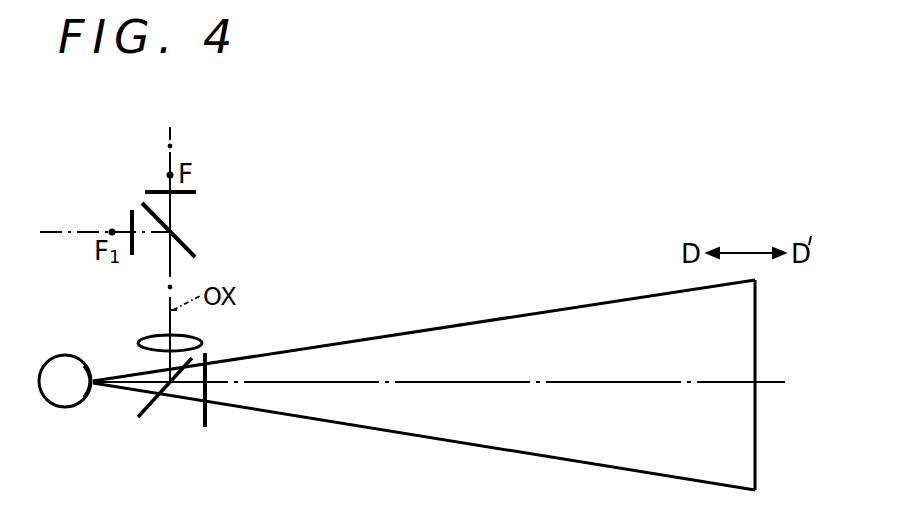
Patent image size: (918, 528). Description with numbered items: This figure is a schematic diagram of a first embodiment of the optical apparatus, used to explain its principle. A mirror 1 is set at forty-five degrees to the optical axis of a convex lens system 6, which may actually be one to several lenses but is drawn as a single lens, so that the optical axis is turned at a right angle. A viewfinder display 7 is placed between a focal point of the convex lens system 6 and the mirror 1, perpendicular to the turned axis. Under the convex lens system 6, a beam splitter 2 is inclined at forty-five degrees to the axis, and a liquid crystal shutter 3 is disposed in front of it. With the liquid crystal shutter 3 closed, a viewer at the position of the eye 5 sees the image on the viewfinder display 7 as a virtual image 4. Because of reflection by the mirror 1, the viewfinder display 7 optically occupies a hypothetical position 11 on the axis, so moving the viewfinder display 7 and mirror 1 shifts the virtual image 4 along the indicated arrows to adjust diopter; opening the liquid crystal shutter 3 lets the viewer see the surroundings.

The mirror 1 is at (194, 251).
The beam splitter 2 is at (140, 420).
The liquid crystal shutter 3 is at (205, 424).
The virtual image 4 is at (755, 458).
The eye 5 is at (66, 408).
The convex lens system 6 is at (203, 342).
The viewfinder display 7 is at (127, 222).
The hypothetical position 11 is at (195, 193).